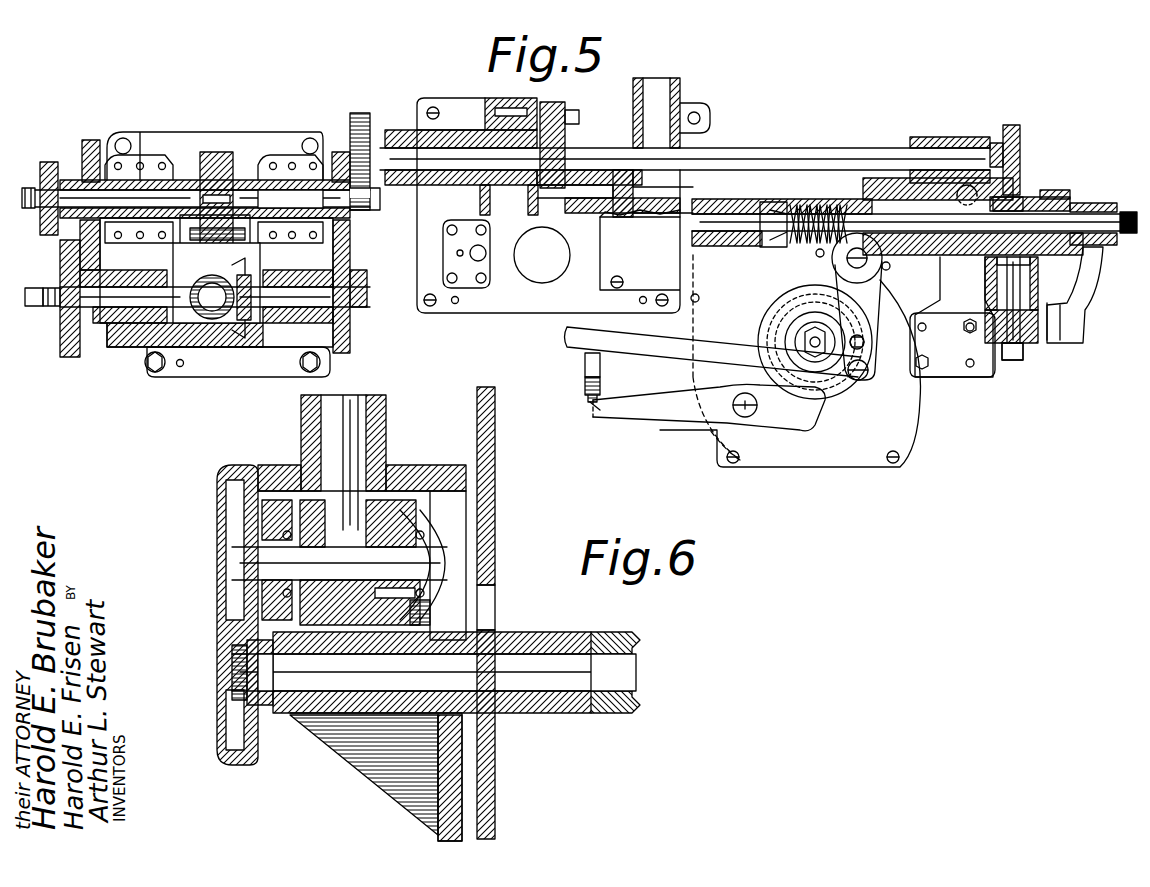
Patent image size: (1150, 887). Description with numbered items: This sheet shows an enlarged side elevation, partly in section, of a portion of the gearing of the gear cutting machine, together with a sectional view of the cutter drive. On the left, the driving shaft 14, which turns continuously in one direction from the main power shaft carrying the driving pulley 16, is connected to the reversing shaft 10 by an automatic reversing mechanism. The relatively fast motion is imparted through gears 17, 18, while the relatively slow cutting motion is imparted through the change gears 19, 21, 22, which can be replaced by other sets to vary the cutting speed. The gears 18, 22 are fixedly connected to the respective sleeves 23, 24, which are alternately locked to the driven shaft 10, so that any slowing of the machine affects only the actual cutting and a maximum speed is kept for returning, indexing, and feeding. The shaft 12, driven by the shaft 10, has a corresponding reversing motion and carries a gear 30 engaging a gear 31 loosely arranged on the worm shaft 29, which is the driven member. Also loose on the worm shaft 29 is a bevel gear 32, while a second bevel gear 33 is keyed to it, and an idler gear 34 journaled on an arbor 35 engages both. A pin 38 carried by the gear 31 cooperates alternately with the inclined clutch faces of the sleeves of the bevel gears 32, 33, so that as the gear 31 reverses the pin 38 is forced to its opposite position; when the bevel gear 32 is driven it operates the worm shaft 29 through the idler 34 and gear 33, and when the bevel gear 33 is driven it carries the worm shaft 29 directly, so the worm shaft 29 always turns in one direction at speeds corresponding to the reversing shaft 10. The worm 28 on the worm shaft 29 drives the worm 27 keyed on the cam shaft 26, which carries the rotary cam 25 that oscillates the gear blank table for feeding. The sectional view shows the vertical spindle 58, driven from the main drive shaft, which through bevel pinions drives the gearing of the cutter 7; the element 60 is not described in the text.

In FIG. 5, the cutter 7 is at (168, 182).
In FIG. 5, the reversing shaft 10 is at (238, 195).
In FIG. 5, the shaft 12 is at (877, 158).
In FIG. 5, the driving shaft 14 is at (148, 335).
In FIG. 5, the driving pulley 16 is at (563, 195).
In FIG. 5, the gear 17 is at (350, 265).
In FIG. 5, the gear 18 is at (340, 150).
In FIG. 5, the gear 19 is at (62, 332).
In FIG. 5, the gear 21 is at (62, 265).
In FIG. 5, the gear 22 is at (84, 152).
In FIG. 5, the sleeve 23 is at (290, 185).
In FIG. 5, the sleeve 24 is at (138, 192).
In FIG. 5, the rotary cam 25 is at (1068, 221).
In FIG. 5, the cam shaft 26 is at (810, 340).
In FIG. 5, the worm 27 is at (810, 250).
In FIG. 5, the worm 28 is at (797, 214).
In FIG. 5, the worm shaft 29 is at (743, 361).
In FIG. 5, the gear 30 is at (1016, 135).
In FIG. 5, the gear 31 is at (1016, 197).
In FIG. 5, the bevel gear 32 is at (1058, 192).
In FIG. 5, the second bevel gear 33 is at (975, 265).
In FIG. 5, the idler gear 34 is at (1068, 280).
In FIG. 5, the arbor 35 is at (1023, 350).
In FIG. 5, the slidable device 38 is at (1000, 272).
In FIG. 6, the vertical spindle 58 is at (350, 433).
In FIG. 6, the bearing housing 60 is at (428, 614).